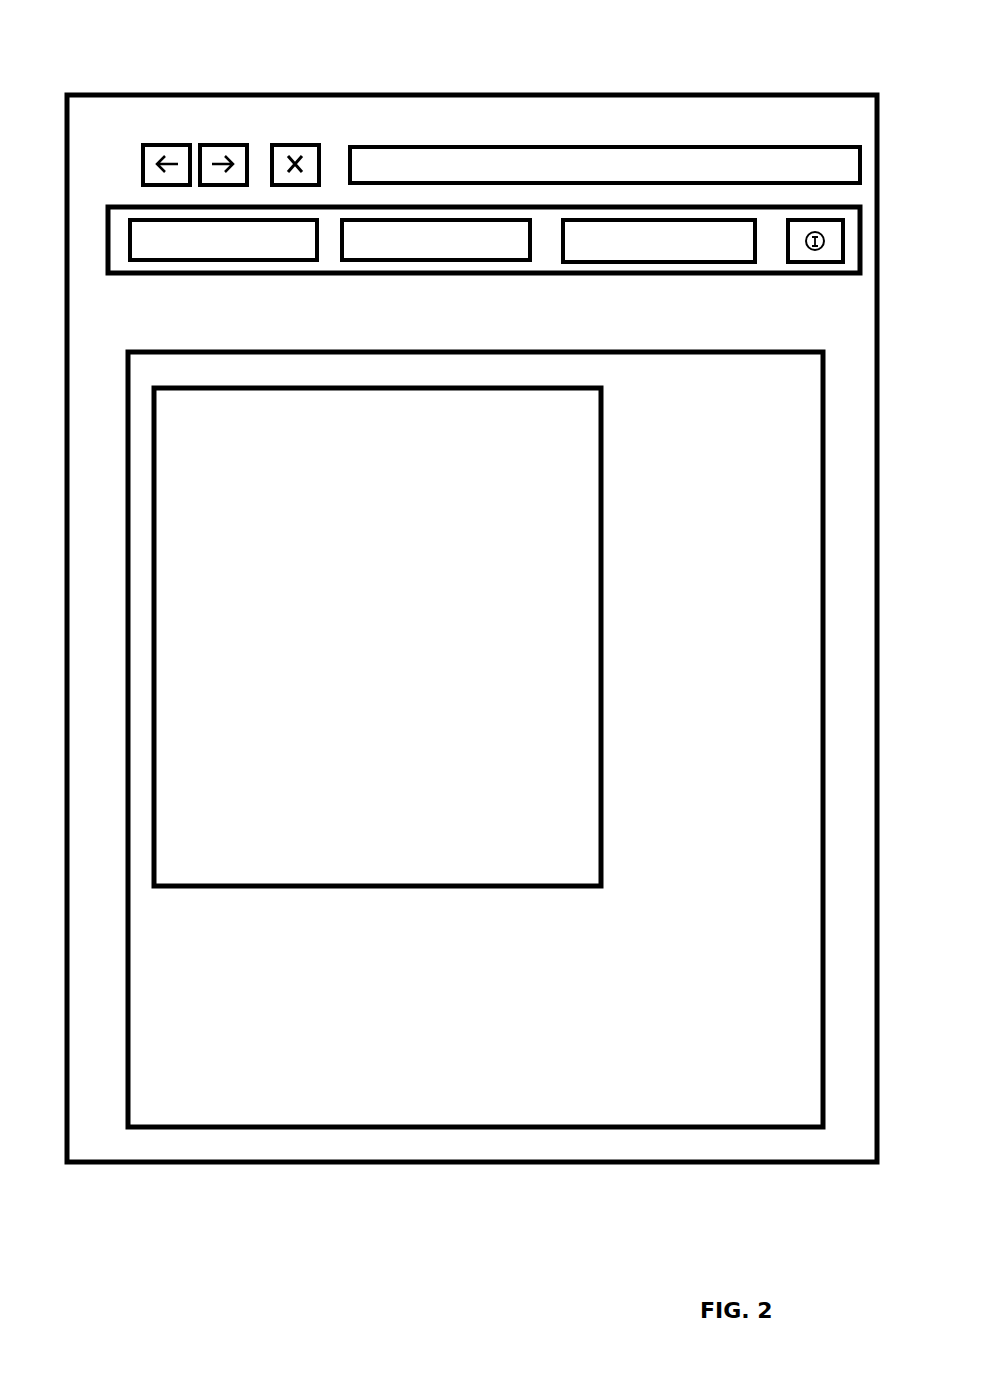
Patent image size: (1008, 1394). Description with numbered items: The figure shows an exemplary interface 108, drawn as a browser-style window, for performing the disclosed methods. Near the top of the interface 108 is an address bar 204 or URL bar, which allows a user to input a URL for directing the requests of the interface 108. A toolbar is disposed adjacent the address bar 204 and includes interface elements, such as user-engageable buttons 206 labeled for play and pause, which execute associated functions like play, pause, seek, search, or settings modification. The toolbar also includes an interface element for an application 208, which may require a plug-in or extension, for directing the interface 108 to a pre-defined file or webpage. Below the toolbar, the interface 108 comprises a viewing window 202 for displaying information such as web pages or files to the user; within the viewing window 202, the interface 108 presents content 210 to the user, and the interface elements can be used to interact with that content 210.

The interface 108 is at (174, 27).
The viewing window 202 is at (116, 1115).
The address bar 204 is at (498, 145).
The user-engageable buttons 206 is at (435, 262).
The application 208 is at (660, 268).
The content 210 is at (552, 894).